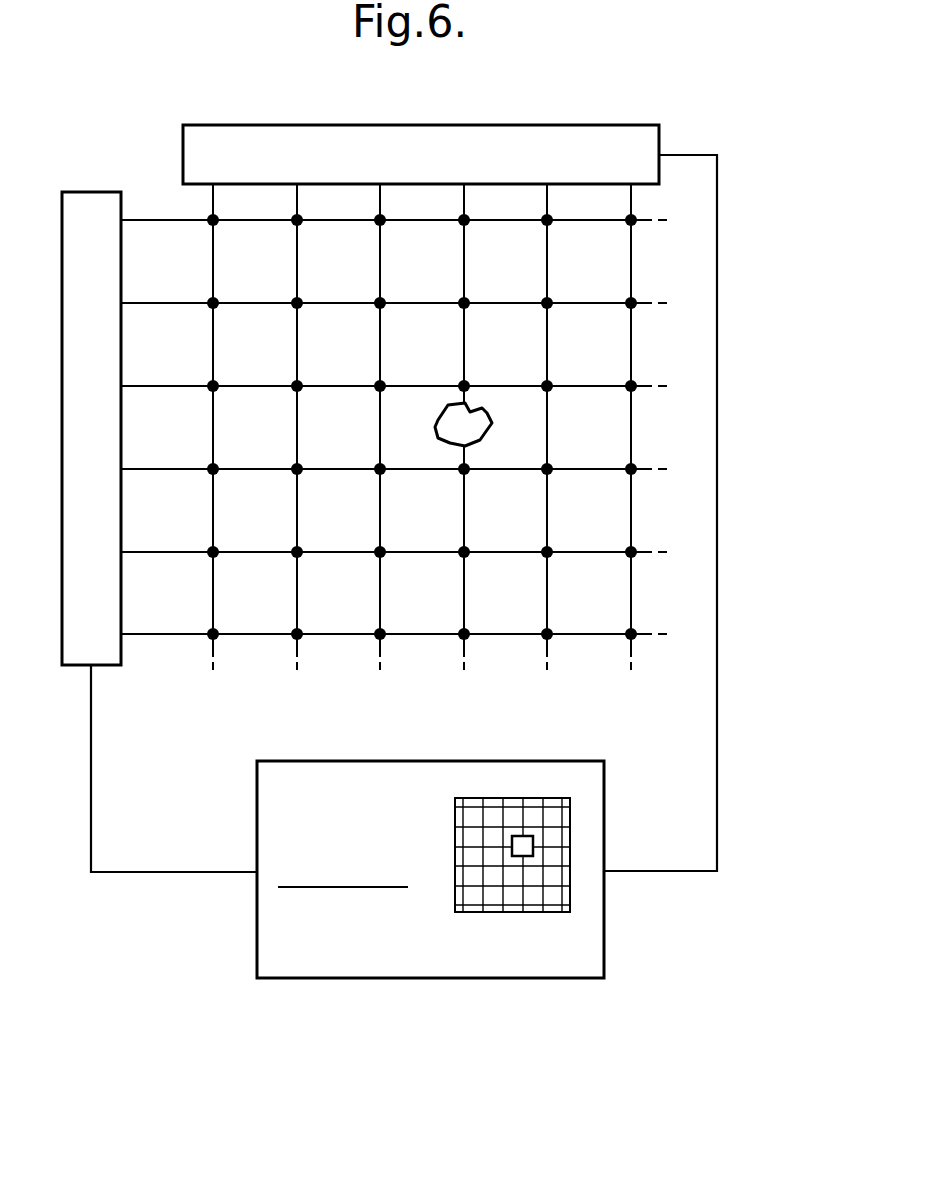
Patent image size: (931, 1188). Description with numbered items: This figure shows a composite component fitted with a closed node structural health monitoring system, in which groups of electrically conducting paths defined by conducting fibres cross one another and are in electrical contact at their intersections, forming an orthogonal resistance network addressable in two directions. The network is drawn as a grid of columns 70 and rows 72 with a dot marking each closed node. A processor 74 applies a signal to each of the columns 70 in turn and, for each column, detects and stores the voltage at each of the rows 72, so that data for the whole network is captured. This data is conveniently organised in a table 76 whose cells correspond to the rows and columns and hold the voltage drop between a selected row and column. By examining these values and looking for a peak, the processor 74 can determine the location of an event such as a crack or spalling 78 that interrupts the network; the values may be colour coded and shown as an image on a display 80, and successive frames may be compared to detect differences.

The columns 70 is at (643, 683).
The sensor array rows 72 is at (777, 192).
The processor 74 is at (328, 943).
The table 76 is at (565, 885).
The crack or spalling 78 is at (492, 424).
The display 80 is at (560, 922).